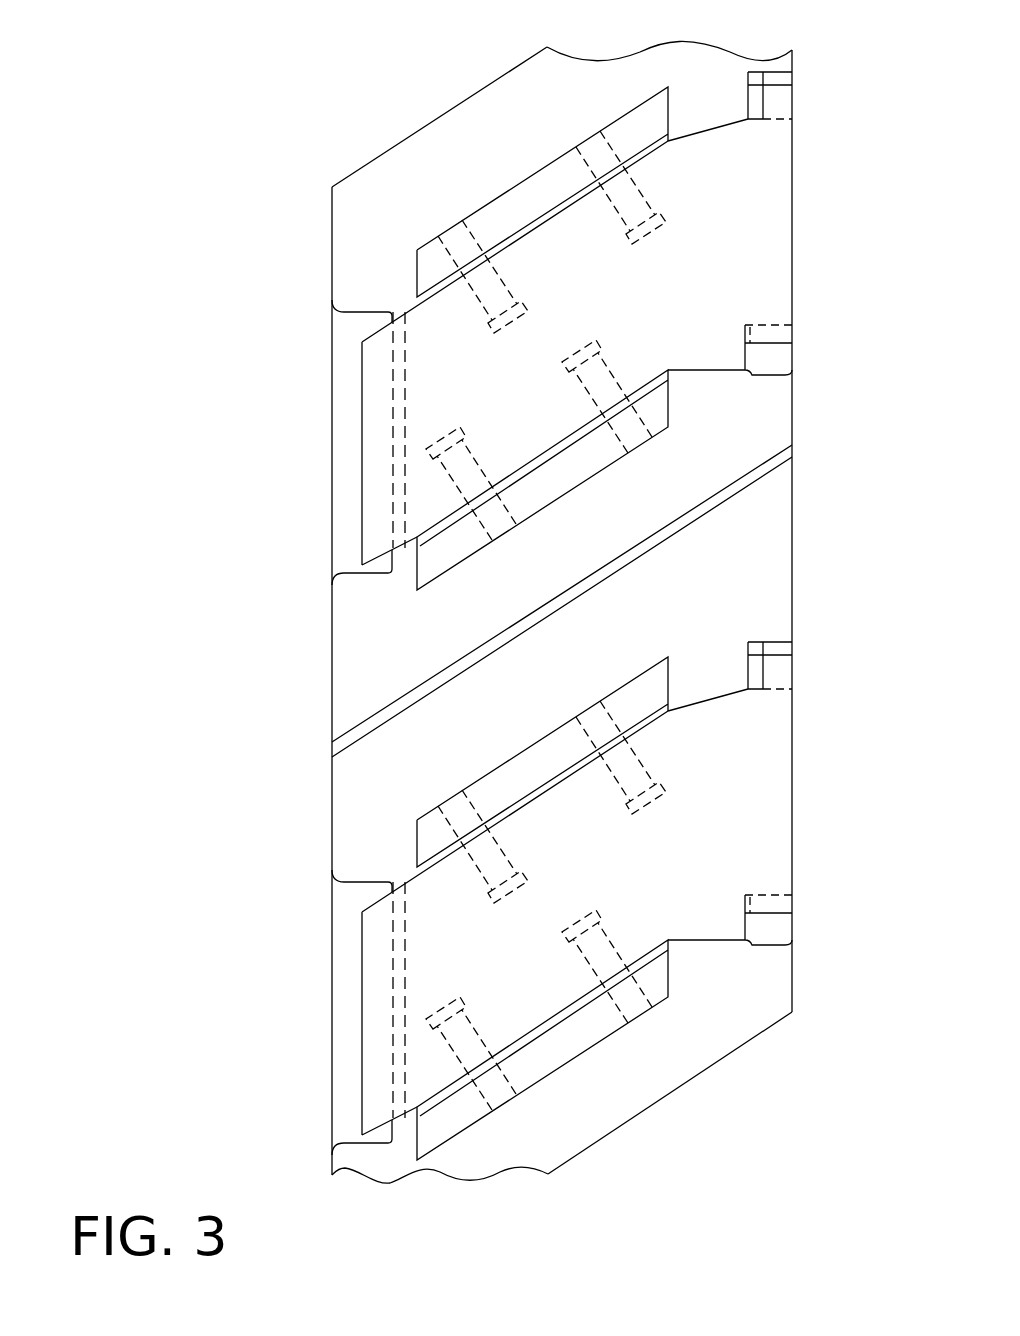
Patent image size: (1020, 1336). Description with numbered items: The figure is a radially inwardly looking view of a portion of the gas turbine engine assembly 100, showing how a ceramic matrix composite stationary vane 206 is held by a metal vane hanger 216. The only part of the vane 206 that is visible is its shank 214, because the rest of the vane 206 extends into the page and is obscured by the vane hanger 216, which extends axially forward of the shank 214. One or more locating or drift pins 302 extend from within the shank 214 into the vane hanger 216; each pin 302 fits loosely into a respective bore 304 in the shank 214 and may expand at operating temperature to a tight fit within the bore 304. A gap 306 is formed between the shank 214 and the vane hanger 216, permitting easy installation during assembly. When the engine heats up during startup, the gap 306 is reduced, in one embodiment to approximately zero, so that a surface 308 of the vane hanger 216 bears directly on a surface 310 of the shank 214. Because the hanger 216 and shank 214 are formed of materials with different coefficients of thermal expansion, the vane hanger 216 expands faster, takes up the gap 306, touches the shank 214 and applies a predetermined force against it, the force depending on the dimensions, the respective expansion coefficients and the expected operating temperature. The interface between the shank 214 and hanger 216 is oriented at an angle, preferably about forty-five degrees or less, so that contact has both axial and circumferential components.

The panel assembly 100 is at (312, 92).
The stationary vane 206 is at (401, 298).
The shank 214 is at (528, 197).
The vane hanger 216 is at (746, 262).
The locating or drift pin 302 is at (655, 195).
The bore 304 is at (503, 338).
The gap 306 is at (668, 140).
The surface of vane hanger 308 is at (507, 242).
The surface of shank 310 is at (525, 233).